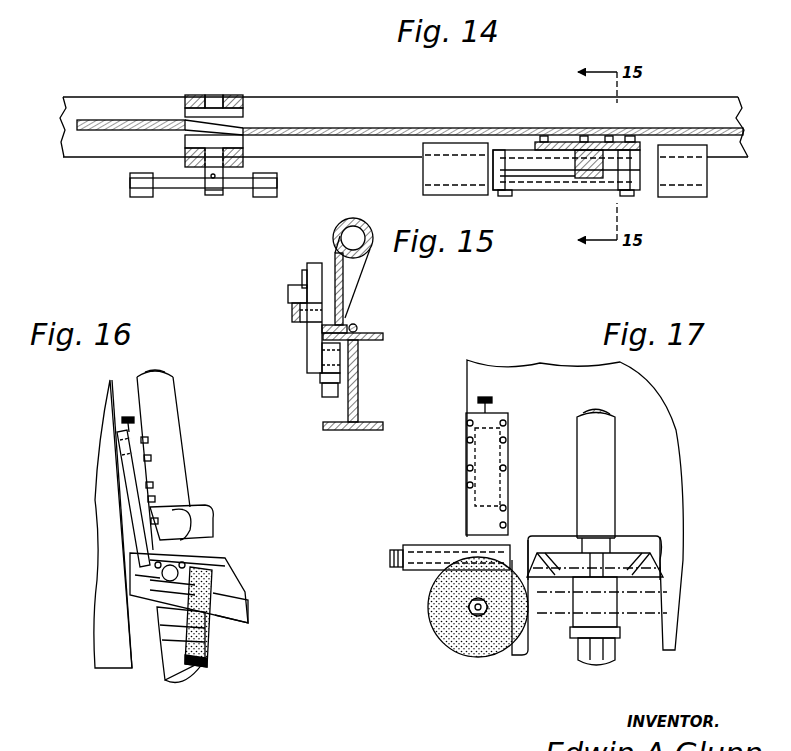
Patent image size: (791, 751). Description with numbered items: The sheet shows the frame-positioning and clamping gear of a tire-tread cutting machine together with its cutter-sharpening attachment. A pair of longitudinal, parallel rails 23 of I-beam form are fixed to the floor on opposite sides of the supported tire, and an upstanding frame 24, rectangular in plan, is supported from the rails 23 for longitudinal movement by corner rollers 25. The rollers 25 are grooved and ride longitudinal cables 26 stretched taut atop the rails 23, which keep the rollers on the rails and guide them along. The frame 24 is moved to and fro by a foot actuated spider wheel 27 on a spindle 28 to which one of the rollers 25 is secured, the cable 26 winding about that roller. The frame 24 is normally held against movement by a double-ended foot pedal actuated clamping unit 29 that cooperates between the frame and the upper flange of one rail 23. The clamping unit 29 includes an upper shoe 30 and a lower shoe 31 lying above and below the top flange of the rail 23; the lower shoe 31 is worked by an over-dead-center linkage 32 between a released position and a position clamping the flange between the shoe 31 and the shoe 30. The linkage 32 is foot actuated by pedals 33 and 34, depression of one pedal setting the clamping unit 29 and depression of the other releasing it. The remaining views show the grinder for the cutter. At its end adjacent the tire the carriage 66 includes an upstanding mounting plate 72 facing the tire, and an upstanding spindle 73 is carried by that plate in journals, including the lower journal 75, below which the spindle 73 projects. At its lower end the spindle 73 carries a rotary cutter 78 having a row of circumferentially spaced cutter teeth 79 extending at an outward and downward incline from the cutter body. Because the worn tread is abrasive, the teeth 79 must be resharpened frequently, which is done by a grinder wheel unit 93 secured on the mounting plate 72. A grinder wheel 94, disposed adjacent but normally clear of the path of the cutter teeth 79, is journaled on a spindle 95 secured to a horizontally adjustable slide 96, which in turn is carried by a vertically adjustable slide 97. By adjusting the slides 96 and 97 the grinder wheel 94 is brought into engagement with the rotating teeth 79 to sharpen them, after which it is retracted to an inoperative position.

In FIG. 14, the rail 23 is at (92, 145).
In FIG. 15, the rail 23 is at (358, 388).
In FIG. 14, the upstanding frame 24 is at (555, 142).
In FIG. 15, the upstanding frame 24 is at (345, 229).
In FIG. 14, the corner roller 25 is at (205, 113).
In FIG. 14, the longitudinal cable 26 is at (105, 118).
In FIG. 15, the longitudinal cable 26 is at (360, 328).
In FIG. 14, the foot actuated spider wheel 27 is at (232, 190).
In FIG. 14, the spindle 28 is at (213, 165).
In FIG. 14, the clamping unit 29 is at (652, 200).
In FIG. 15, the clamping unit 29 is at (292, 311).
In FIG. 15, the upper shoe 30 is at (345, 326).
In FIG. 15, the lower shoe 31 is at (330, 350).
In FIG. 14, the over-dead-center linkage 32 is at (543, 193).
In FIG. 14, the pedal 33 is at (440, 168).
In FIG. 14, the pedal 34 is at (678, 162).
In FIG. 16, the carriage 66 is at (103, 507).
In FIG. 17, the carriage 66 is at (462, 410).
In FIG. 17, the mounting plate 72 is at (672, 450).
In FIG. 16, the spindle 73 is at (168, 420).
In FIG. 17, the spindle 73 is at (598, 485).
In FIG. 16, the lower journal 75 is at (205, 520).
In FIG. 16, the rotary cutter 78 is at (232, 561).
In FIG. 17, the rotary cutter 78 is at (635, 547).
In FIG. 16, the cutter teeth 79 is at (240, 592).
In FIG. 17, the cutter teeth 79 is at (660, 582).
In FIG. 16, the grinder wheel unit 93 is at (212, 655).
In FIG. 17, the grinder wheel unit 93 is at (430, 627).
In FIG. 16, the grinder wheel 94 is at (205, 633).
In FIG. 17, the grinder wheel 94 is at (450, 642).
In FIG. 16, the spindle 95 is at (160, 610).
In FIG. 17, the spindle 95 is at (478, 620).
In FIG. 17, the horizontally adjustable slide 96 is at (440, 560).
In FIG. 16, the vertically adjustable slide 97 is at (150, 470).
In FIG. 17, the vertically adjustable slide 97 is at (480, 455).